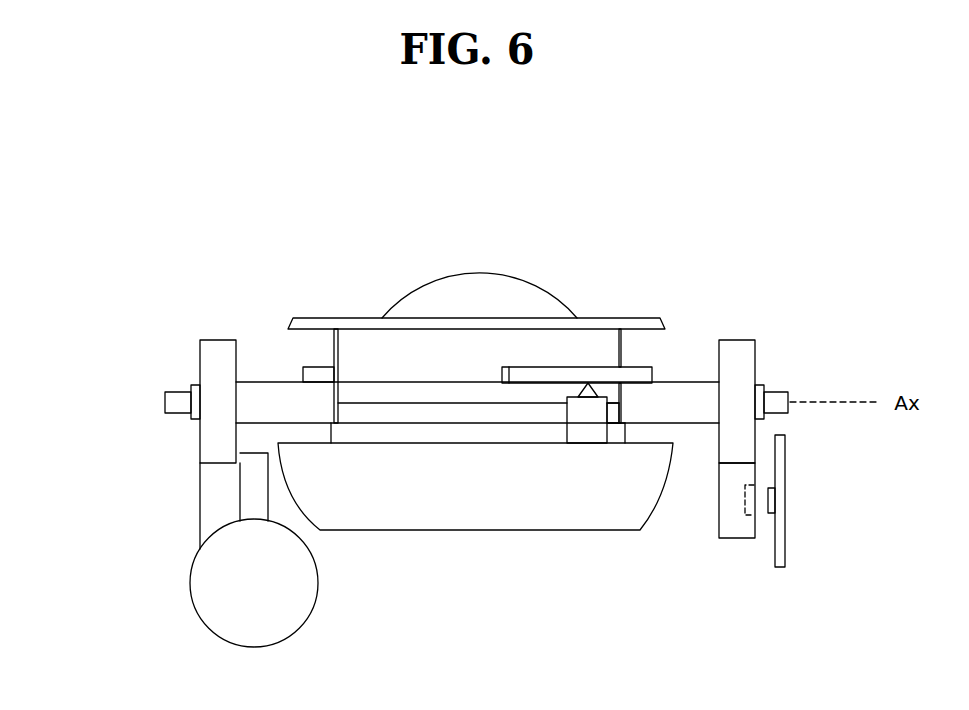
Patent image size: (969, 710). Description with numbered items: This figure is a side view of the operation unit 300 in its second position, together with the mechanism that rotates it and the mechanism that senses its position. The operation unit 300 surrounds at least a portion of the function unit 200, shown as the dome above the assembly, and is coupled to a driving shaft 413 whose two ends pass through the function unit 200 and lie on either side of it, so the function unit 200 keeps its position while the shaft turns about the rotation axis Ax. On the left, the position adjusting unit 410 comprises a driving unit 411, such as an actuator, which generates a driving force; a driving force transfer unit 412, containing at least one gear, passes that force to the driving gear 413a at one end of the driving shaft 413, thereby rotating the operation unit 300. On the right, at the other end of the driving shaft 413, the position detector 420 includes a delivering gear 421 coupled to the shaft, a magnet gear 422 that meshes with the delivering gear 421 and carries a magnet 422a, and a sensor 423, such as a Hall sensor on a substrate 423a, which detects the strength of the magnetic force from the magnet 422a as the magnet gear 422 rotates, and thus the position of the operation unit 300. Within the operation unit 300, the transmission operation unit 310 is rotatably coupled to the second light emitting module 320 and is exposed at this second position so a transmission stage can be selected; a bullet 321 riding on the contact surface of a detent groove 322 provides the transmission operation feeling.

The function unit 200 is at (417, 276).
The operation unit 300 is at (476, 449).
The transmission operation unit 310 is at (378, 520).
The second light emitting module 320 is at (437, 325).
The bullet 321 is at (582, 380).
The detent groove 322 is at (632, 372).
The position adjusting unit 410 is at (166, 465).
The driving unit 411 is at (207, 580).
The driving force transfer unit 412 is at (207, 489).
The driving shaft 413 is at (175, 402).
The driving gear 413a is at (220, 352).
The position detector 420 is at (758, 503).
The delivering gear 421 is at (731, 437).
The magnet gear 422 is at (737, 532).
The magnet 422a is at (755, 487).
The sensor 423 is at (771, 516).
The substrate 423a is at (780, 528).